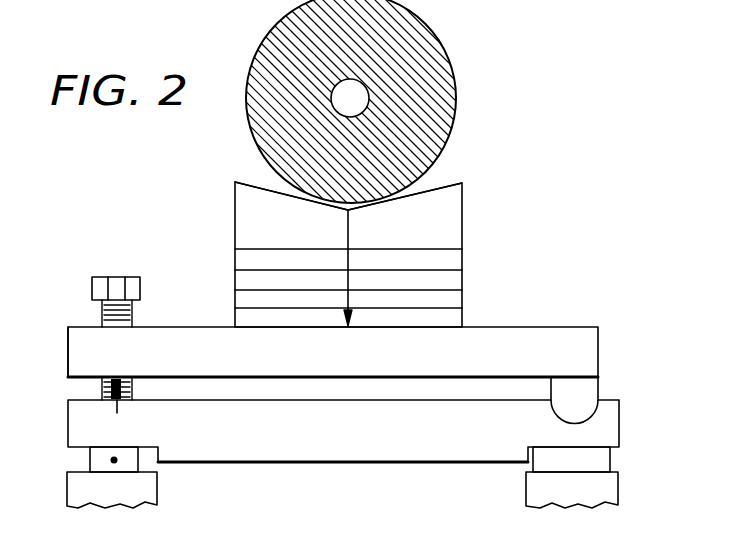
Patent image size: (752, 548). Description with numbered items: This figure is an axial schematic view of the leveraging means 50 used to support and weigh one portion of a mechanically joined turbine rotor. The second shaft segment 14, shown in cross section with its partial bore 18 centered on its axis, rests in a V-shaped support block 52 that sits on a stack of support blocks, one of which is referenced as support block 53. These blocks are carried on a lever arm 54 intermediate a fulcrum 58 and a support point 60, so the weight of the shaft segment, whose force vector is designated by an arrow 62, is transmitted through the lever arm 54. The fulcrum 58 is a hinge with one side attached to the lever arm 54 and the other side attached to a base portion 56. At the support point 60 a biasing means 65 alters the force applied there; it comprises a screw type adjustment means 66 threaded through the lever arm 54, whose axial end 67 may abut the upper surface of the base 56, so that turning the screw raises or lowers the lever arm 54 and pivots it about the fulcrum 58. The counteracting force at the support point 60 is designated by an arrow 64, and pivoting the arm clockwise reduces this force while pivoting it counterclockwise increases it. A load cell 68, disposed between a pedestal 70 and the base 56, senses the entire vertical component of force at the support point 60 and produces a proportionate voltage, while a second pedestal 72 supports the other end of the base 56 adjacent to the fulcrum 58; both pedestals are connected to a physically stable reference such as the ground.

The second shaft segment 14 is at (448, 57).
The partial bore 18 is at (369, 100).
The leveraging means 50 is at (354, 274).
The V-shaped support block 52 is at (462, 200).
The support block 53 is at (235, 258).
The lever arm 54 is at (535, 327).
The base portion 56 is at (340, 463).
The fulcrum 58 is at (600, 396).
The support point 60 is at (80, 378).
The arrow 62 is at (348, 322).
The arrow 64 is at (117, 413).
The biasing means 65 is at (116, 276).
The screw type adjustment means 66 is at (102, 314).
The axial end 67 is at (134, 393).
The load cell 68 is at (90, 452).
The pedestal 70 is at (157, 488).
The pedestal 72 is at (618, 485).